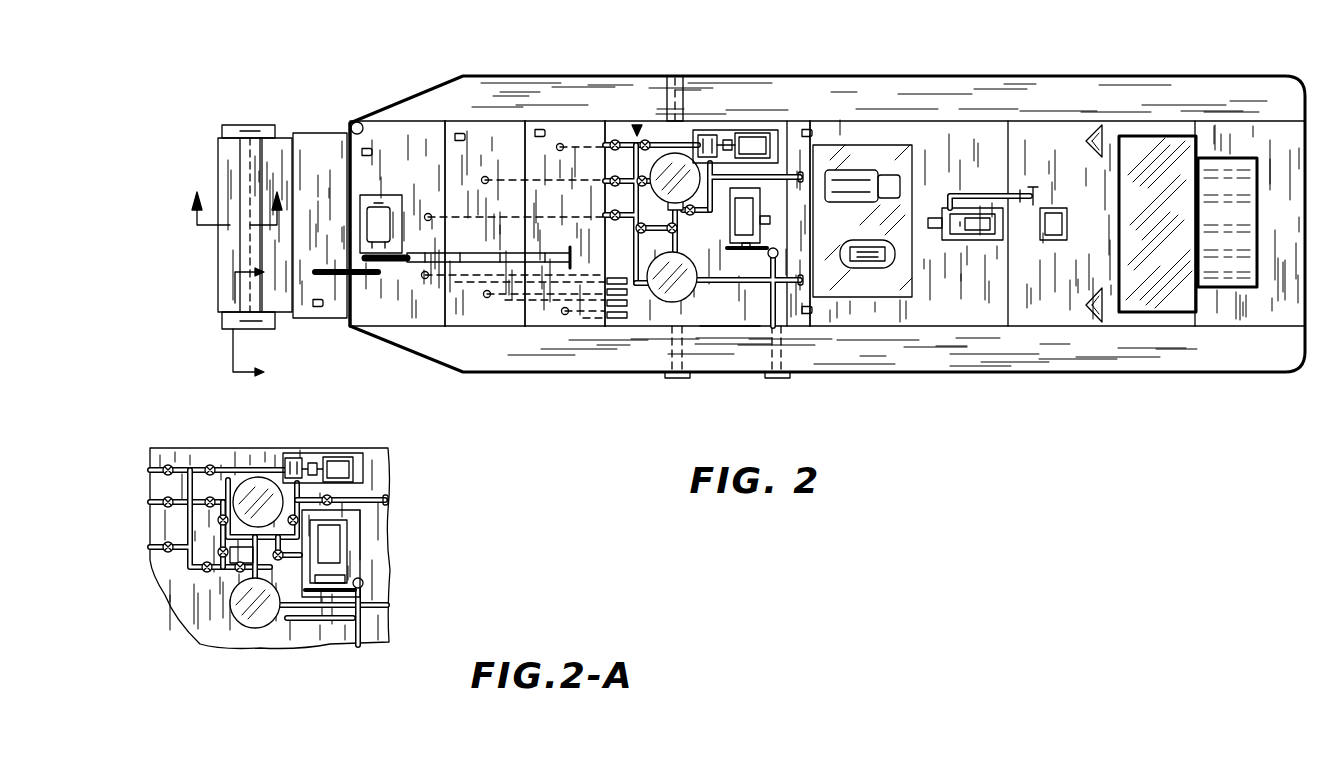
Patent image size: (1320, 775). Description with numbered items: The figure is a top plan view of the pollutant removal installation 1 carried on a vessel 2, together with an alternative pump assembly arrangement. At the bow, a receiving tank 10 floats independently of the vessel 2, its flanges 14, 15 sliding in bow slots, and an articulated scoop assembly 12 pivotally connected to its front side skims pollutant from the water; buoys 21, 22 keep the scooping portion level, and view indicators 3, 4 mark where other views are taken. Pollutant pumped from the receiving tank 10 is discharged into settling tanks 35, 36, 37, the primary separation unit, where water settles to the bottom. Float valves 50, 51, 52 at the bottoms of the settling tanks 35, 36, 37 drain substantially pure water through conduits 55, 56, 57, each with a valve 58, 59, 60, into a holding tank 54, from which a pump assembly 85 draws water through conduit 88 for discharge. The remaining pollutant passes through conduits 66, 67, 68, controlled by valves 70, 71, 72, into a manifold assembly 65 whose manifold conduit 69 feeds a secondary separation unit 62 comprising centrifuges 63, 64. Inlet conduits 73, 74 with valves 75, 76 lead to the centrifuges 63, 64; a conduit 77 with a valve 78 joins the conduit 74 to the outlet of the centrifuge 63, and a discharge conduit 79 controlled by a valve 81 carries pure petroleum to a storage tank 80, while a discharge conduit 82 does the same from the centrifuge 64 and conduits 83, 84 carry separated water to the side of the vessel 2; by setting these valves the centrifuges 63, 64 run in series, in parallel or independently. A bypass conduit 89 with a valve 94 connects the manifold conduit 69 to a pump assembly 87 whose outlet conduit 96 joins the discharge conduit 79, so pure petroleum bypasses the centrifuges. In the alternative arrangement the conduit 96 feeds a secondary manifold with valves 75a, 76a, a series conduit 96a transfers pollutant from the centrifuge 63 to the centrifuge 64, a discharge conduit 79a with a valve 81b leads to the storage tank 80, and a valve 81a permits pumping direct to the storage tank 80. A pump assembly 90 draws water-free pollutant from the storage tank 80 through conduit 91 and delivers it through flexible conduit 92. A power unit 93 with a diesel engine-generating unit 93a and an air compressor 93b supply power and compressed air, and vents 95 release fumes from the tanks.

In FIG. 2, the mobile fire fighting apparatus 1 is at (583, 66).
In FIG. 2, the vessel 2 is at (1140, 72).
In FIG. 2, the section line 3- 3 is at (234, 197).
In FIG. 2, the section line 4- 4 is at (259, 326).
In FIG. 2, the receiving tank 10 is at (312, 129).
In FIG. 2, the articulated scoop assembly 12 is at (214, 272).
In FIG. 2, the flange 14 is at (354, 122).
In FIG. 2, the flange 15 is at (348, 330).
In FIG. 2, the buoy 21 is at (240, 126).
In FIG. 2, the buoy 22 is at (268, 329).
In FIG. 2, the settling tank 35 is at (392, 124).
In FIG. 2, the settling tank 36 is at (478, 130).
In FIG. 2, the settling tank 37 is at (550, 128).
In FIG. 2, the float valve 50 is at (425, 279).
In FIG. 2, the float valve 51 is at (487, 297).
In FIG. 2, the float valve 52 is at (565, 314).
In FIG. 2, the holding tank 54 is at (729, 330).
In FIG. 2, the conduit 55 is at (455, 285).
In FIG. 2, the conduit 56 is at (505, 303).
In FIG. 2, the conduit 57 is at (583, 321).
In FIG. 2, the valve 58 is at (627, 322).
In FIG. 2, the valve 59 is at (617, 316).
In FIG. 2, the valve 60 is at (607, 306).
In FIG. 2, the secondary separation unit 62 is at (728, 136).
In FIG. 2, the centrifuge 63 is at (679, 168).
In FIG. 2-A, the centrifuge 63 is at (260, 492).
In FIG. 2, the centrifuge 64 is at (678, 290).
In FIG. 2-A, the centrifuge 64 is at (240, 610).
In FIG. 2, the manifold assembly 65 is at (637, 124).
In FIG. 2, the conduit 66 is at (455, 215).
In FIG. 2, the conduit 67 is at (516, 177).
In FIG. 2, the conduit 68 is at (565, 144).
In FIG. 2, the manifold conduit 69 is at (626, 140).
In FIG. 2-A, the manifold conduit 69 is at (188, 486).
In FIG. 2, the valve 70 is at (609, 214).
In FIG. 2, the valve 71 is at (609, 180).
In FIG. 2, the valve 72 is at (612, 139).
In FIG. 2, the inlet conduit 73 is at (668, 120).
In FIG. 2-A, the inlet conduit 73 is at (224, 508).
In FIG. 2, the inlet conduit 74 is at (635, 230).
In FIG. 2, the valve 75 is at (659, 216).
In FIG. 2-A, the valve 75 is at (222, 494).
In FIG. 2-A, the valve 75a is at (190, 518).
In FIG. 2, the valve 76 is at (632, 245).
In FIG. 2-A, the valve 76 is at (212, 572).
In FIG. 2-A, the valve 76a is at (220, 556).
In FIG. 2, the conduit 77 is at (690, 250).
In FIG. 2, the valve 78 is at (680, 283).
In FIG. 2-A, the valve 78 is at (244, 575).
In FIG. 2, the discharge conduit 79 is at (760, 185).
In FIG. 2-A, the discharge conduit 79 is at (300, 500).
In FIG. 2-A, the discharge conduit 79a is at (372, 606).
In FIG. 2, the storage tank 80 is at (841, 128).
In FIG. 2-A, the storage tank 80 is at (378, 538).
In FIG. 2, the valve 81 is at (696, 217).
In FIG. 2-A, the valve 81 is at (392, 612).
In FIG. 2-A, the valve 81a is at (336, 490).
In FIG. 2-A, the valve 81b is at (275, 562).
In FIG. 2, the discharge conduit 82 is at (756, 287).
In FIG. 2-A, the discharge conduit 82 is at (350, 618).
In FIG. 2, the conduit 83 is at (686, 130).
In FIG. 2, the conduit 84 is at (684, 376).
In FIG. 2, the pump assembly 85 is at (770, 221).
In FIG. 2, the pump assembly 87 is at (770, 131).
In FIG. 2-A, the pump assembly 87 is at (340, 455).
In FIG. 2, the conduit 88 is at (784, 362).
In FIG. 2, the bypass conduit 89 is at (680, 122).
In FIG. 2-A, the bypass conduit 89 is at (272, 468).
In FIG. 2, the pump assembly 90 is at (963, 244).
In FIG. 2, the conduit 91 is at (934, 216).
In FIG. 2, the conduit 92 is at (969, 193).
In FIG. 2, the power unit 93 is at (872, 143).
In FIG. 2, the diesel engine-generating unit 93a is at (872, 172).
In FIG. 2, the air compressor 93b is at (869, 272).
In FIG. 2, the valve 94 is at (646, 139).
In FIG. 2-A, the valve 94 is at (209, 464).
In FIG. 2, the vent 95 is at (360, 155).
In FIG. 2, the conduit 96 is at (727, 138).
In FIG. 2-A, the conduit 96 is at (313, 508).
In FIG. 2-A, the series conduit 96a is at (258, 582).